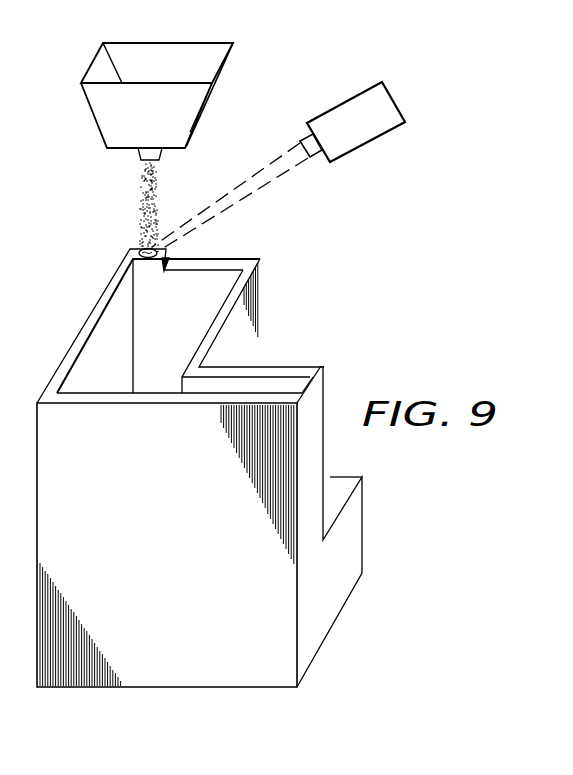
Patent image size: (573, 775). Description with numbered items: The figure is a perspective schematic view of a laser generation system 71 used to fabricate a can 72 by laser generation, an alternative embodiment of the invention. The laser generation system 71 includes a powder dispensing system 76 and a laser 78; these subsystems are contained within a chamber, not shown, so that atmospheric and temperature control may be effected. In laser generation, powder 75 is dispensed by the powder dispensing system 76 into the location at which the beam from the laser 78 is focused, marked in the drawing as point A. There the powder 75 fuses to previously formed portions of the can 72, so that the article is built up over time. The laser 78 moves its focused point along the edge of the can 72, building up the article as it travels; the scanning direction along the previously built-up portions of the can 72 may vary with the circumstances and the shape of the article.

The laser generation system 71 is at (393, 283).
The can 72 is at (181, 560).
The powder 75 is at (142, 201).
The powder dispensing system 76 is at (160, 130).
The laser 78 is at (344, 103).
The deposition point / melt pool A is at (150, 258).